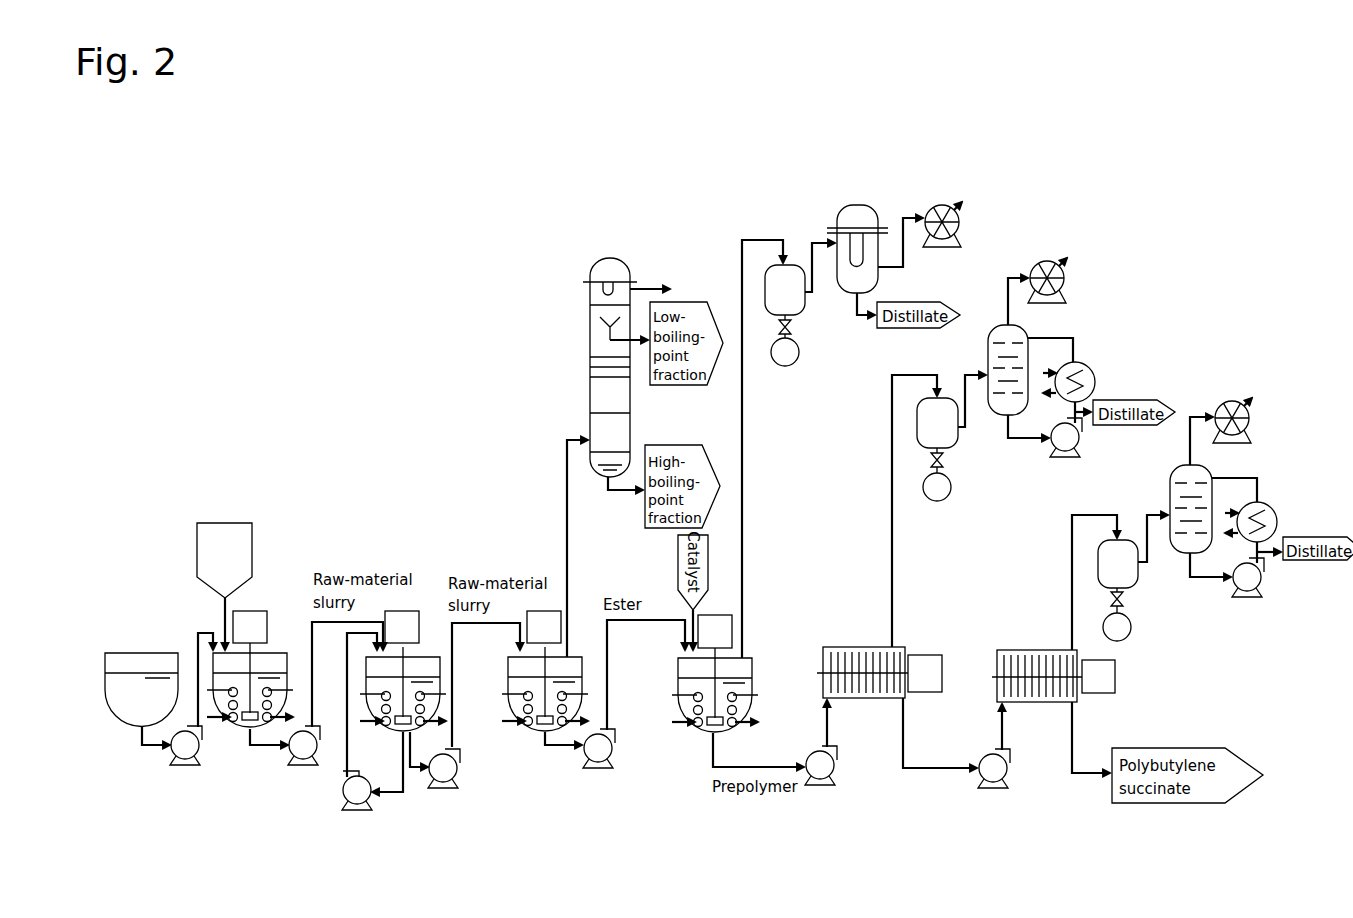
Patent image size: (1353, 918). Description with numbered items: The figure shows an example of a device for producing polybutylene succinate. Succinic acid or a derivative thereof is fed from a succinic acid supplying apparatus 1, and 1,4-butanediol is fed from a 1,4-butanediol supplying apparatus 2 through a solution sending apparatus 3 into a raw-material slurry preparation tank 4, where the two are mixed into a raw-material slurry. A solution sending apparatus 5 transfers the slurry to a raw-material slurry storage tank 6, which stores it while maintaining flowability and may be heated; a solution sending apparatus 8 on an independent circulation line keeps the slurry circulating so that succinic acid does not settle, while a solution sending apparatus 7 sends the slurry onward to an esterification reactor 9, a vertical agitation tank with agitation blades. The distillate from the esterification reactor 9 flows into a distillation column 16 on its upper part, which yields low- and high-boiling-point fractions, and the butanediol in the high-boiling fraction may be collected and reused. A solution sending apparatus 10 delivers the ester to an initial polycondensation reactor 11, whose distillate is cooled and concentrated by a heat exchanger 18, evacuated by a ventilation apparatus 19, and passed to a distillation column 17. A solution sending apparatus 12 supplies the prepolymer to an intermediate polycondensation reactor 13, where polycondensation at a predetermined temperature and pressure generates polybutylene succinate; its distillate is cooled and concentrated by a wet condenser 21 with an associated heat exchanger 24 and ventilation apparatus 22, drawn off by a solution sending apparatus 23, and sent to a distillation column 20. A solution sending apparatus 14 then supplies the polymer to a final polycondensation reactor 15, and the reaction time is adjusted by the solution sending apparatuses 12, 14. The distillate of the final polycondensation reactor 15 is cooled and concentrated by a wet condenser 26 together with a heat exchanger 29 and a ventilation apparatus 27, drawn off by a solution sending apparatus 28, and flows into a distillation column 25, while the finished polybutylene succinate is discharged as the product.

The succinic acid supplying apparatus 1 is at (198, 552).
The 1,4-butanediol supplying apparatus 2 is at (148, 663).
The solution sending apparatus 3 is at (180, 767).
The raw-material slurry preparation tank 4 is at (240, 728).
The solution sending apparatus 5 is at (300, 768).
The raw-material slurry storage tank 6 is at (385, 725).
The solution sending apparatus 7 is at (438, 790).
The solution sending apparatus 8 is at (347, 810).
The esterification reactor 9 is at (537, 733).
The solution sending apparatus 10 is at (598, 770).
The initial polycondensation reactor 11 is at (697, 728).
The solution sending apparatus 12 is at (815, 790).
The intermediate polycondensation reactor 13 is at (853, 645).
The solution sending apparatus 14 is at (993, 790).
The final polycondensation reactor 15 is at (1047, 703).
The distillation column 16 is at (587, 383).
The distillation column 17 is at (798, 318).
The heat exchanger 18 is at (845, 205).
The ventilation apparatus 19 is at (927, 205).
The distillation column 20 is at (952, 448).
The wet condenser 21 is at (990, 363).
The ventilation apparatus 22 is at (1053, 263).
The solution sending apparatus 23 is at (1060, 460).
The heat exchanger 24 is at (1087, 362).
The distillation column 25 is at (1132, 587).
The wet condenser 26 is at (1170, 498).
The ventilation apparatus 27 is at (1237, 403).
The solution sending apparatus 28 is at (1262, 583).
The heat exchanger 29 is at (1272, 505).